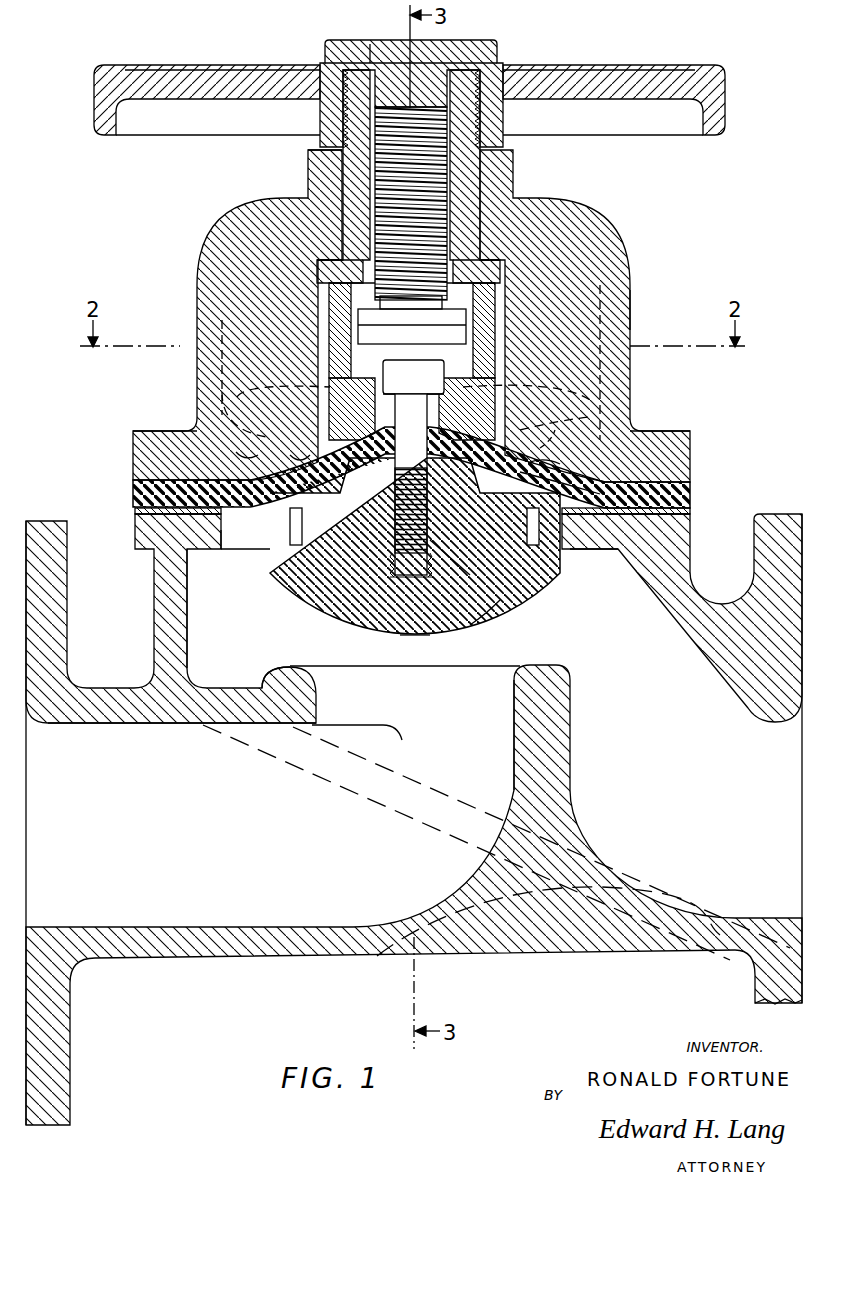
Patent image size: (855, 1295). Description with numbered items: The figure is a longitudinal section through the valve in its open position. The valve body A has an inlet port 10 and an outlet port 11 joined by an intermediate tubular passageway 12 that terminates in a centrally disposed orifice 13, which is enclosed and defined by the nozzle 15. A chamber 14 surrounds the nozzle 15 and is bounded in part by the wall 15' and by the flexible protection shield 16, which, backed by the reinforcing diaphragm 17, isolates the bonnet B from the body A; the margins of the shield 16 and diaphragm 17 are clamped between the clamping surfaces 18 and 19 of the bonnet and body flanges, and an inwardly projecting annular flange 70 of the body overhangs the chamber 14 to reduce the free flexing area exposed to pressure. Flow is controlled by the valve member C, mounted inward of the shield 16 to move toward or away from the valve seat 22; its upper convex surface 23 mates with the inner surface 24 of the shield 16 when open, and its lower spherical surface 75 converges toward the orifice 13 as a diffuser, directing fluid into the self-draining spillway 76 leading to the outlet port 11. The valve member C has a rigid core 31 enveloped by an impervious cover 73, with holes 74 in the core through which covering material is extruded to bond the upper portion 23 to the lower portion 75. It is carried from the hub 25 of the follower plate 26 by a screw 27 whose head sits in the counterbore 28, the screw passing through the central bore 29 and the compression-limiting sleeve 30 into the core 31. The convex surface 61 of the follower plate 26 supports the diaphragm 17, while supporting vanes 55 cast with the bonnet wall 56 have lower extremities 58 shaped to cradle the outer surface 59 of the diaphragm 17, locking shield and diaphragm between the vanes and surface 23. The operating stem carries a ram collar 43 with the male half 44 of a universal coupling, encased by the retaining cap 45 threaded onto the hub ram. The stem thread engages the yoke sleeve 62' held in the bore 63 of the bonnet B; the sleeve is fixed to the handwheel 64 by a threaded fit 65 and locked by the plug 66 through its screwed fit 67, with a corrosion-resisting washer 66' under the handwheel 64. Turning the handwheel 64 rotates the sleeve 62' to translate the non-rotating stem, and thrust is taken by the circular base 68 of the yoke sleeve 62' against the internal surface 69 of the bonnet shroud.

The inlet port 10 is at (30, 822).
The outlet port 11 is at (780, 802).
The intermediate tubular passageway 12 is at (225, 777).
The orifice 13 is at (405, 683).
The chamber 14 is at (429, 595).
The nozzle 15 is at (566, 735).
The wall 15' is at (216, 608).
The protection shield 16 is at (690, 510).
The reinforcing diaphragm 17 is at (690, 493).
The clamping surface 18 is at (140, 478).
The clamping surface 19 is at (140, 519).
The valve seat 22 is at (316, 668).
The upper convex surface 23 is at (528, 484).
The inner surface 24 is at (480, 516).
The hub 25 is at (352, 409).
The follower plate 26 is at (245, 400).
The screw 27 is at (413, 377).
The counterbore 28 is at (467, 409).
The central bore 29 is at (385, 402).
The compression-limiting sleeve 30 is at (396, 438).
The core 31 is at (450, 554).
The ram collar 43 is at (466, 312).
The male half of universal coupling 44 is at (412, 327).
The retaining cap 45 is at (335, 292).
The supporting vanes 55 is at (305, 450).
The bonnet wall 56 is at (592, 292).
The lower extremities of vanes 58 is at (240, 446).
The outer surface of diaphragm 59 is at (545, 457).
The convex surface of follower plate 61 is at (537, 442).
The yoke sleeve 62' is at (442, 176).
The bore of bonnet 63 is at (343, 167).
The handwheel 64 is at (725, 100).
The threaded fit 65 is at (343, 115).
The locking plug 66 is at (432, 42).
The corrosion resisting washer 66' is at (439, 100).
The internally screwed fit 67 is at (385, 62).
The circular base of yoke sleeve 68 is at (320, 272).
The internal surface of bonnet shroud 69 is at (498, 272).
The annular flange 70 is at (232, 540).
The cover 73 is at (500, 628).
The holes 74 is at (414, 545).
The lower spherical surface 75 is at (460, 634).
The spillway 76 is at (437, 802).
The valve body A is at (190, 957).
The bonnet B is at (608, 243).
The valve member C is at (540, 607).